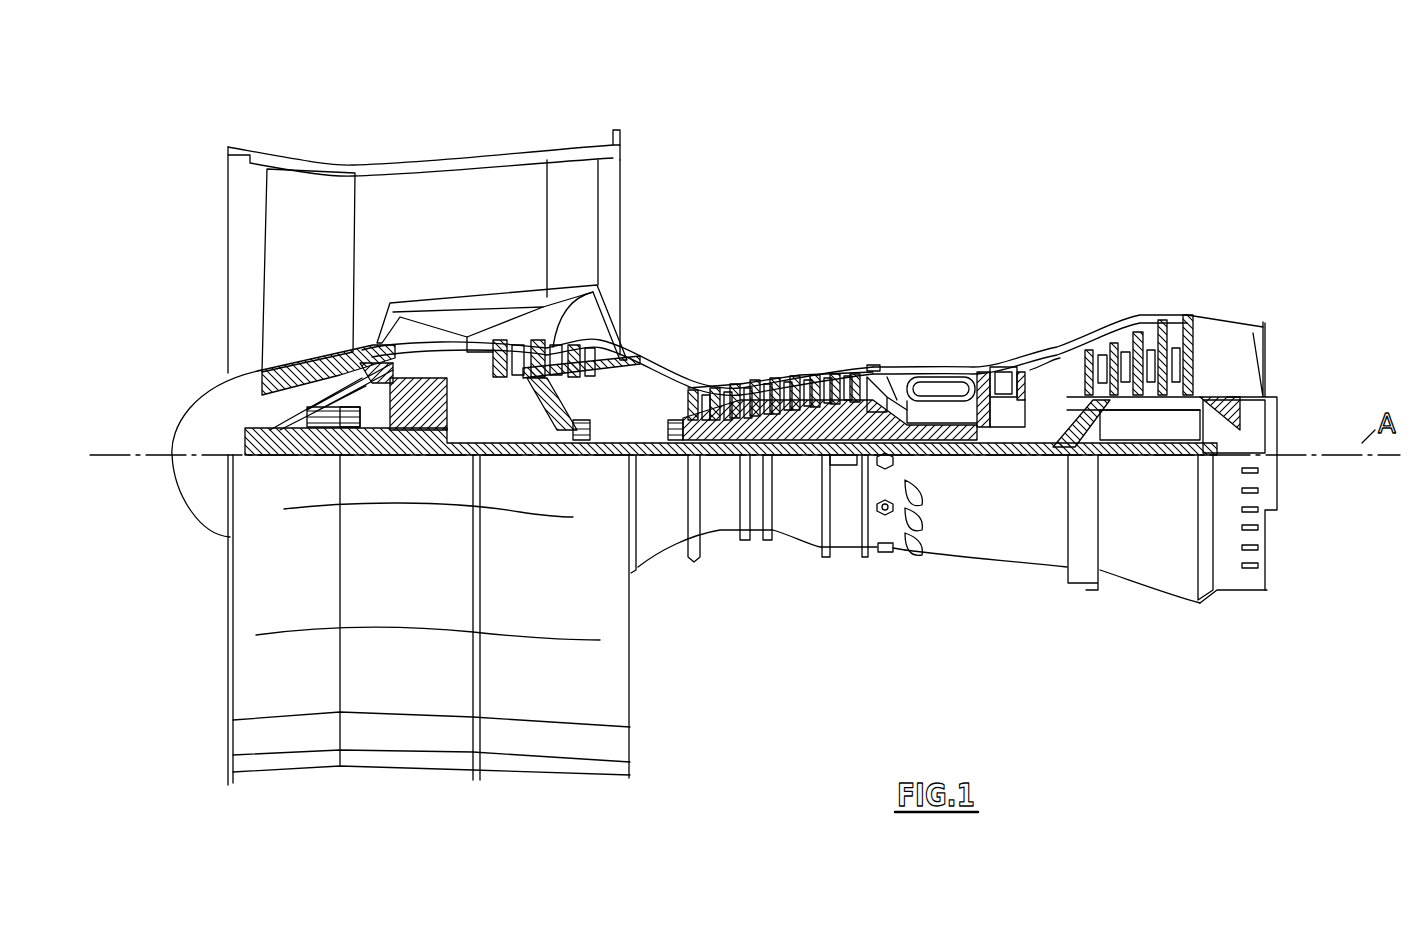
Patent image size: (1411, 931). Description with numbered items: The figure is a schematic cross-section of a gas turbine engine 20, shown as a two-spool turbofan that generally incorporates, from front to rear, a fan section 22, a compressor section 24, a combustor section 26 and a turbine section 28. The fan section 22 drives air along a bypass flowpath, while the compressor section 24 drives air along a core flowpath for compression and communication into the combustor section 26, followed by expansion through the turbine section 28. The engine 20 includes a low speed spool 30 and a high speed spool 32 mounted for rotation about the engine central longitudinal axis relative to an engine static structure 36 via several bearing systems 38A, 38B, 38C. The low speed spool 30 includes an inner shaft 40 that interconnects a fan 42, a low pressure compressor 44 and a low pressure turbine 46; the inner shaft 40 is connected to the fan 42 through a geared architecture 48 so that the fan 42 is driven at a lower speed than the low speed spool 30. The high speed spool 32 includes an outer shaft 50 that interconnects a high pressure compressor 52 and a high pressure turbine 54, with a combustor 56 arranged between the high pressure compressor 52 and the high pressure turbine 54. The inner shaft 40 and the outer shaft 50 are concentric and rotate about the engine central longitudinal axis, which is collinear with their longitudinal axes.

The gas turbine engine 20 is at (950, 186).
The fan section 22 is at (350, 135).
The compressor section 24 is at (690, 348).
The combustor section 26 is at (936, 298).
The turbine section 28 is at (1087, 275).
The low speed spool 30 is at (993, 470).
The high speed spool 32 is at (797, 420).
The engine static structure 36 is at (845, 565).
The bearing system 38A is at (310, 427).
The bearing system 38B is at (360, 430).
The bearing system 38C is at (578, 432).
The inner shaft 40 is at (650, 457).
The fan 42 is at (318, 286).
The low pressure compressor 44 is at (597, 297).
The low pressure turbine 46 is at (1142, 317).
The geared architecture 48 is at (437, 437).
The outer shaft 50 is at (940, 437).
The high pressure compressor 52 is at (783, 378).
The high pressure turbine 54 is at (1004, 350).
The combustor 56 is at (933, 390).